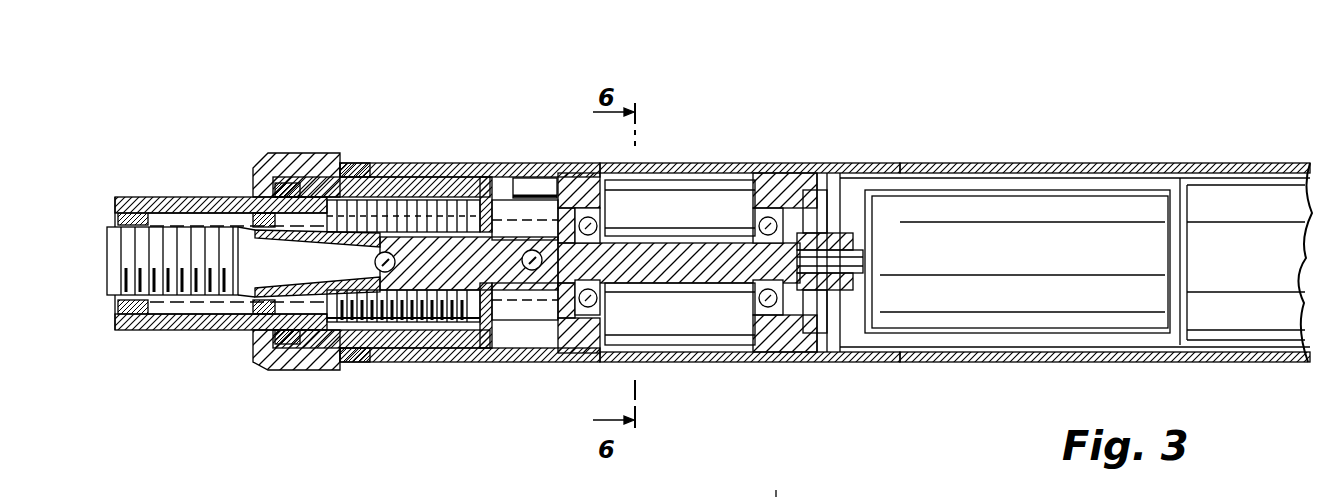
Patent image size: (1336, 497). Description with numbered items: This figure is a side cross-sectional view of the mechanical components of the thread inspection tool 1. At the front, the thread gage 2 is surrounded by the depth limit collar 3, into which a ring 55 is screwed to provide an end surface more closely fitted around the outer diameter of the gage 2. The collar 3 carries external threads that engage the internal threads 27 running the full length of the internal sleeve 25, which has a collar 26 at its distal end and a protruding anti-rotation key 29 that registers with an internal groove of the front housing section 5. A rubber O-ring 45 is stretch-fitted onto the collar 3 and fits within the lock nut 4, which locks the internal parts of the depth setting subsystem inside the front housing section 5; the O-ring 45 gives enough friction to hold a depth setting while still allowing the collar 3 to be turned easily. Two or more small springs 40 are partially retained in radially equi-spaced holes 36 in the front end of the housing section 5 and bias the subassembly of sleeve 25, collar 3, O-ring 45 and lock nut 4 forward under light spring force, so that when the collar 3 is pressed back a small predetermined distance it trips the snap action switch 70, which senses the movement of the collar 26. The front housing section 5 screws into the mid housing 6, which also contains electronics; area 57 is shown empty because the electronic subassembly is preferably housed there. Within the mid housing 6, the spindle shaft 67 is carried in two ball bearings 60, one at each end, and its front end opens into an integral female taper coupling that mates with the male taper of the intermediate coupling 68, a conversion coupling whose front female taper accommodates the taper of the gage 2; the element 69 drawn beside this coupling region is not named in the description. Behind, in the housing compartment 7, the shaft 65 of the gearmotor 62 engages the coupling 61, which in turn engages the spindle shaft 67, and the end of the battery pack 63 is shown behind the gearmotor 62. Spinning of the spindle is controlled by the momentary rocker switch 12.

The thread inspection tool 1 is at (202, 100).
The thread gage 2 is at (172, 250).
The depth limit collar 3 is at (146, 330).
The lock nut 4 is at (288, 152).
The front housing section 5 is at (437, 170).
The mid housing 6 is at (737, 165).
The housing compartment 7 is at (1097, 165).
The momentary rocker switch 12 is at (776, 494).
The internal sleeve 25 is at (395, 173).
The collar 26 is at (472, 185).
The internal threads 27 is at (482, 362).
The key 29 is at (375, 355).
The radially equi-spaced holes 36 is at (373, 160).
The small springs 40 is at (342, 155).
The rubber O-ring 45 is at (255, 330).
The ring 55 is at (128, 197).
The area 57 is at (670, 200).
The ball bearings 60 is at (602, 188).
The coupling 61 is at (842, 360).
The gearmotor 62 is at (978, 235).
The battery pack 63 is at (1225, 235).
The shaft 65 is at (847, 185).
The spindle shaft 67 is at (538, 368).
The intermediate coupling 68 is at (413, 355).
The upper wedge 69 is at (253, 262).
The snap action switch 70 is at (538, 188).